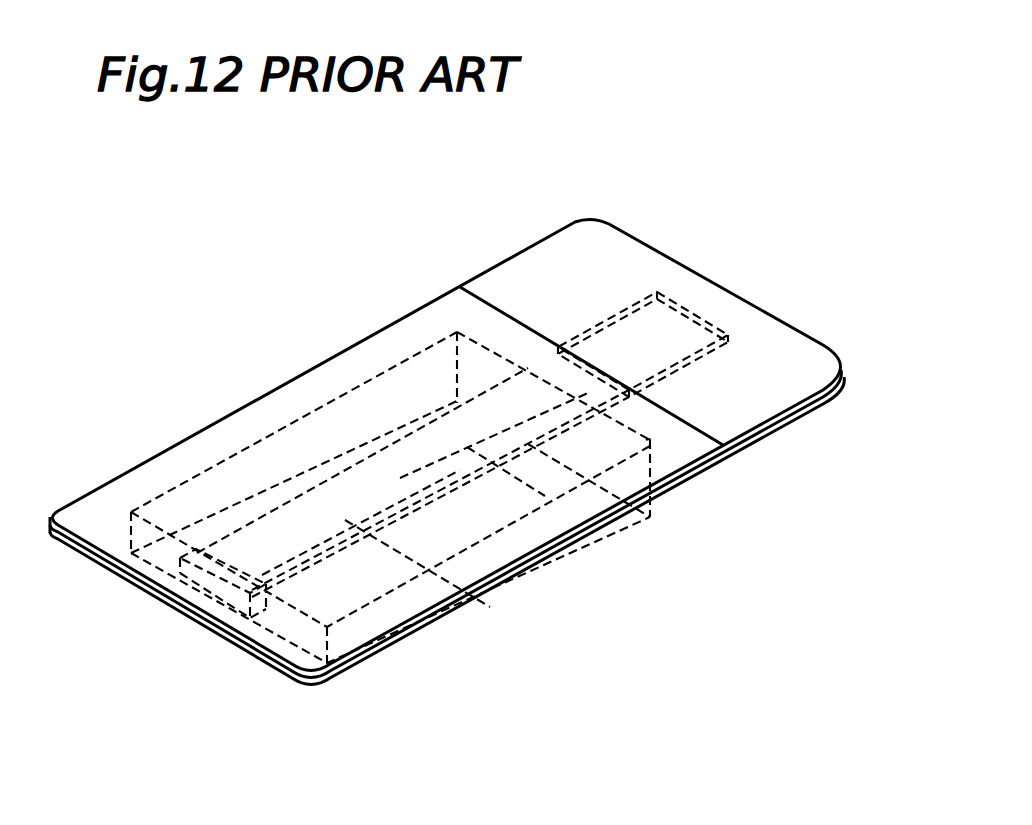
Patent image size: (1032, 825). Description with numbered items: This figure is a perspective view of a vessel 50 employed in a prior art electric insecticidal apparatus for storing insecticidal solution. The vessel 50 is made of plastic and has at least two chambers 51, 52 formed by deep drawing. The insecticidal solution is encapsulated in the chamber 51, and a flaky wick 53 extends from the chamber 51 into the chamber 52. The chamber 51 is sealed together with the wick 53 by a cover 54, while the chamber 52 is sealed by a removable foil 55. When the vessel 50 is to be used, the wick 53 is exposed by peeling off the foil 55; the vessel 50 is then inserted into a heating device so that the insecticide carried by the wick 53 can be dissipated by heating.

The vessel 50 is at (726, 256).
The chamber 51 is at (301, 410).
The chamber 52 is at (706, 374).
The flaky wick 53 is at (463, 476).
The cover 54 is at (138, 478).
The removable foil 55 is at (618, 248).